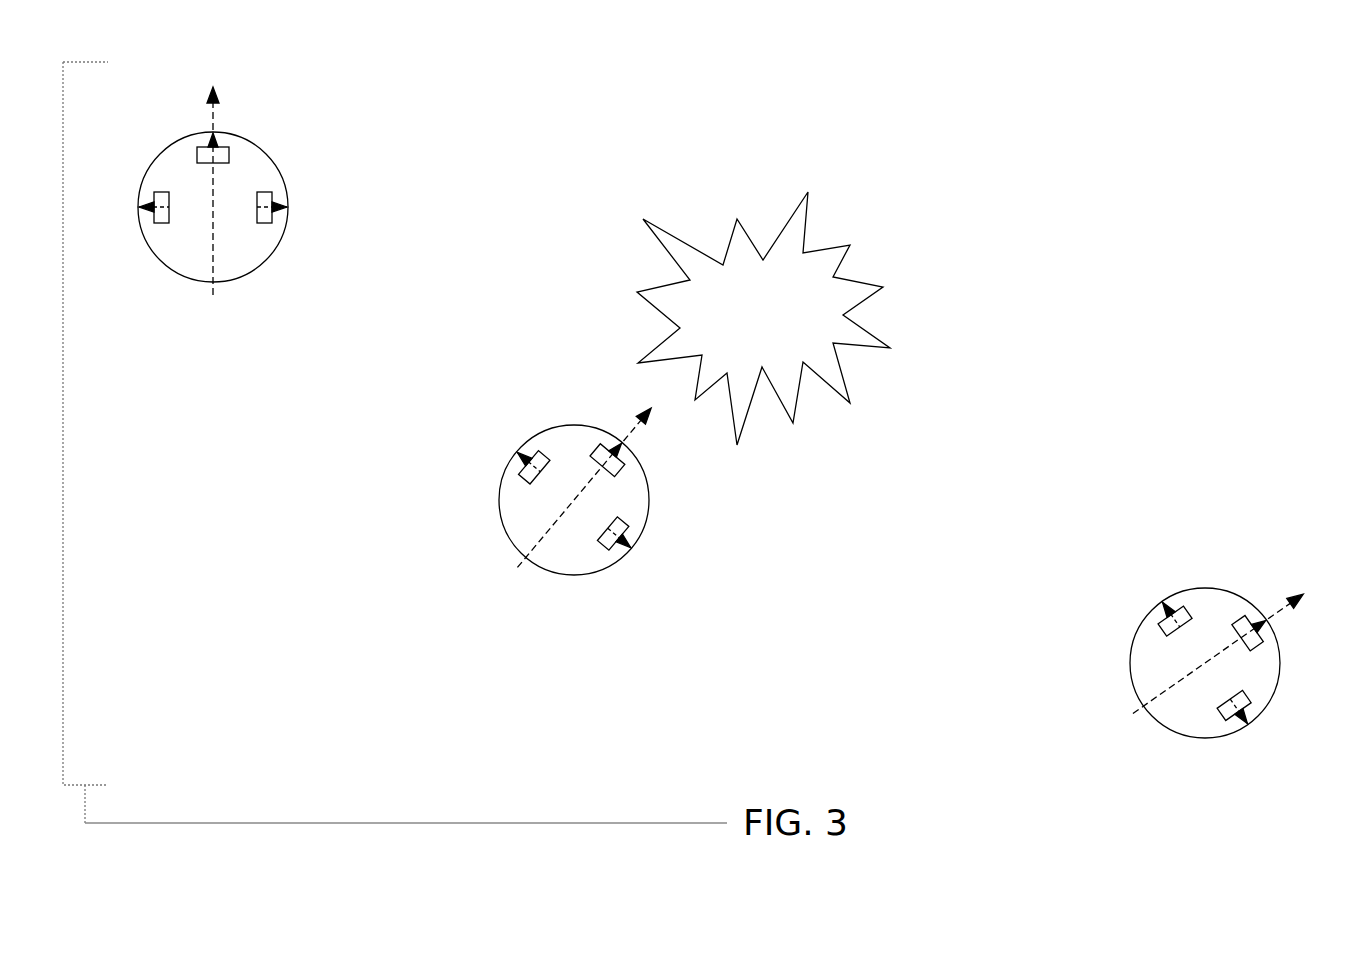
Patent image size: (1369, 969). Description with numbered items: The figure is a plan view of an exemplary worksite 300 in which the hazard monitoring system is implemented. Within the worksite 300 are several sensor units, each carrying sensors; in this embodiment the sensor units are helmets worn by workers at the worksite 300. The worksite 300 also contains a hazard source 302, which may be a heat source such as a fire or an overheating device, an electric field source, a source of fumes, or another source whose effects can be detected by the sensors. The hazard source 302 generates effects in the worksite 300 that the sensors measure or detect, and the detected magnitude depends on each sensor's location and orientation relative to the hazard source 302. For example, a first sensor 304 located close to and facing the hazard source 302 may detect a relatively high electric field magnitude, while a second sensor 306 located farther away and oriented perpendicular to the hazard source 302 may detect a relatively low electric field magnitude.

The worksite 300 is at (1002, 148).
The hazard source 302 is at (850, 244).
The first sensor 304 is at (630, 470).
The second sensor 306 is at (1258, 641).